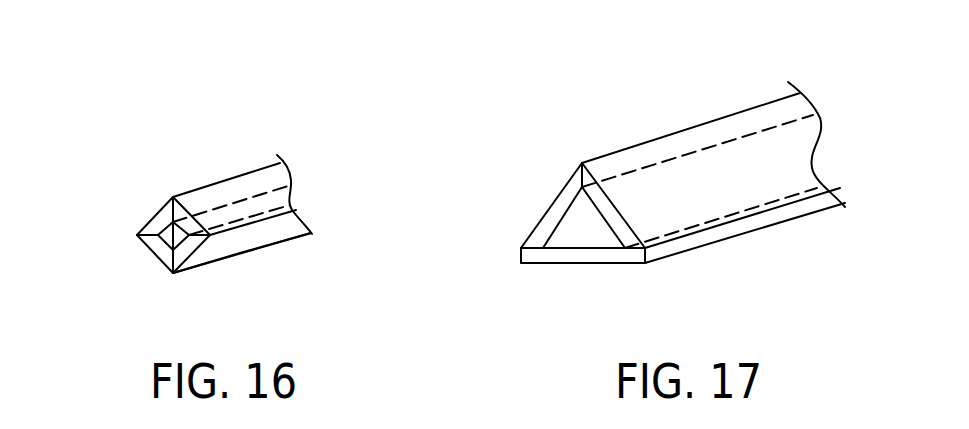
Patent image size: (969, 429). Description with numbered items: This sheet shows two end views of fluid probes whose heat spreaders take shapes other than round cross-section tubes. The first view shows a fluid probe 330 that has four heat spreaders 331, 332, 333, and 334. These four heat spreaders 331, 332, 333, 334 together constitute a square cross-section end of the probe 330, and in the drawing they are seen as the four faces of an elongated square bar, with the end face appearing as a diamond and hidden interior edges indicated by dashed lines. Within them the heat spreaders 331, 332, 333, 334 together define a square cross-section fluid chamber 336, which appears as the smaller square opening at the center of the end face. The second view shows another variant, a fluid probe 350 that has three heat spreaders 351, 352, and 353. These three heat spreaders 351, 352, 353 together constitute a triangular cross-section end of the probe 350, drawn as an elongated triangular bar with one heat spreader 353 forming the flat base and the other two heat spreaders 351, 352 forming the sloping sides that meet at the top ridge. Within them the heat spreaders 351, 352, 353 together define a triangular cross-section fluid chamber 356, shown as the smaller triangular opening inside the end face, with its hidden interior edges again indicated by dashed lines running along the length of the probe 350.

In FIG. 16, the fluid probe 330 is at (239, 126).
In FIG. 16, the heat spreader 331 is at (162, 222).
In FIG. 16, the heat spreader 332 is at (252, 205).
In FIG. 16, the heat spreader 333 is at (183, 270).
In FIG. 16, the heat spreader 334 is at (157, 255).
In FIG. 16, the fluid chamber 336 is at (152, 236).
In FIG. 17, the fluid probe 350 is at (677, 81).
In FIG. 17, the heat spreader 351 is at (555, 203).
In FIG. 17, the heat spreader 352 is at (745, 173).
In FIG. 17, the heat spreader 353 is at (602, 265).
In FIG. 17, the fluid chamber 356 is at (582, 226).